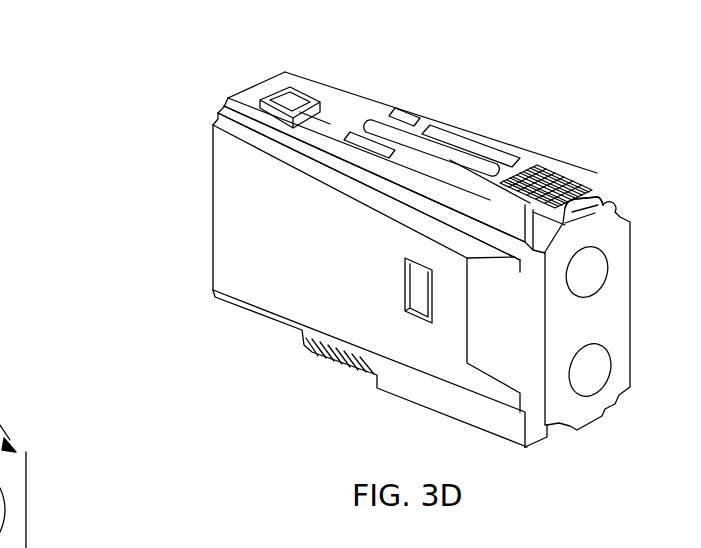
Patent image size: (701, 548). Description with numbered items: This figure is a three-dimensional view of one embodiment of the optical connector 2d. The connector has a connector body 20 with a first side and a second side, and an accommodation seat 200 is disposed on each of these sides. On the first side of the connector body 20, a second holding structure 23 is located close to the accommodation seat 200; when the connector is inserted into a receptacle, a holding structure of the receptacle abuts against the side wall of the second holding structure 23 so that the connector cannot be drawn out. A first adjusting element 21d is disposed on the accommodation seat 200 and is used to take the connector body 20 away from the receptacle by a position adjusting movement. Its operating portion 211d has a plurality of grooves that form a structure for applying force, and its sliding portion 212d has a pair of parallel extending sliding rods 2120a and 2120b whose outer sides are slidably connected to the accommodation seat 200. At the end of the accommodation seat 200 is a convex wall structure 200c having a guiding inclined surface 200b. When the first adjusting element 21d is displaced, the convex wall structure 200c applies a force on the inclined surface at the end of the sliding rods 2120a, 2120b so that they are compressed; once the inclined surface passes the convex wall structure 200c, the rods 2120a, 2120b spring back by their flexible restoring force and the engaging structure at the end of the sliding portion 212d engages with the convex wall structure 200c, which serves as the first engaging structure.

The optical connector 2d is at (216, 94).
The connector body 20 is at (268, 92).
The second holding structure 23 is at (307, 103).
The accommodation seat 200 is at (437, 192).
The guiding inclined surface 200b is at (318, 120).
The convex wall structure 200c is at (400, 116).
The sliding portion 212d is at (433, 120).
The extending sliding rod 2120a is at (443, 120).
The extending sliding rod 2120b is at (368, 143).
The operating portion 211d is at (545, 165).
The first adjusting element 21d is at (605, 188).